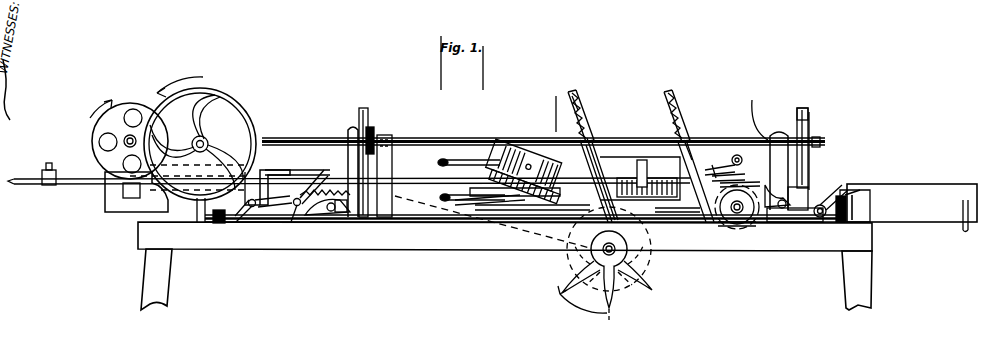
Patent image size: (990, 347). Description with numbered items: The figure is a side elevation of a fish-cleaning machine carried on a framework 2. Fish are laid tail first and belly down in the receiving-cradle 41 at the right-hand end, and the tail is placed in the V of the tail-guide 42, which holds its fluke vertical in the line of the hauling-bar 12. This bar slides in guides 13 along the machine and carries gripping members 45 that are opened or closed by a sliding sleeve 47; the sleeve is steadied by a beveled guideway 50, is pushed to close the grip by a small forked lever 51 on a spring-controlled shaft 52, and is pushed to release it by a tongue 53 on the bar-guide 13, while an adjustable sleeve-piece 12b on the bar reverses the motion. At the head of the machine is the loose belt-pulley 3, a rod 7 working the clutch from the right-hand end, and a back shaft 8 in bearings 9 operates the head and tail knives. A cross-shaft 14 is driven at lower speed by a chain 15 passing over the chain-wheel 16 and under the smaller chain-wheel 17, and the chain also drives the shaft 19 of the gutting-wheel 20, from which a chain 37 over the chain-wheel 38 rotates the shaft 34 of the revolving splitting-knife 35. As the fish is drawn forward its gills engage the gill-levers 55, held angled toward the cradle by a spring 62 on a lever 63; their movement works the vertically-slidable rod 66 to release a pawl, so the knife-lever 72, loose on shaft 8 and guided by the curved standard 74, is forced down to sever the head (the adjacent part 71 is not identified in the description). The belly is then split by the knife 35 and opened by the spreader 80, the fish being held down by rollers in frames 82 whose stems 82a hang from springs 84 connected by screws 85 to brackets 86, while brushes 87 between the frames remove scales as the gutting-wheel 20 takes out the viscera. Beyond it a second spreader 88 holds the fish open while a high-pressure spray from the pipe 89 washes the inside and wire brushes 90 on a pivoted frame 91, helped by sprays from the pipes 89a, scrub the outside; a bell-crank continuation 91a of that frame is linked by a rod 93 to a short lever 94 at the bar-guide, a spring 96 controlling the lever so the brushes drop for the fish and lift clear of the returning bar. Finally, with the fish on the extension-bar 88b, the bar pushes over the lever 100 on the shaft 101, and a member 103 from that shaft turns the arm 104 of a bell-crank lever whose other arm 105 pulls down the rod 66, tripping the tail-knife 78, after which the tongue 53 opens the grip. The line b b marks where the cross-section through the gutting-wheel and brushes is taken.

The framework 2 is at (170, 268).
The loose belt-pulley 3 is at (238, 118).
The rod 7 is at (266, 222).
The shaft 8 is at (298, 140).
The bearings 9 is at (387, 138).
The hauling-bar 12 is at (26, 178).
The sleeve-piece 12b is at (50, 163).
The guides 13 is at (112, 188).
The cross-shaft 14 is at (118, 146).
The chain 15 is at (392, 224).
The chain-wheel 16 is at (133, 108).
The chain-wheel 17 is at (205, 135).
The shaft 19 is at (590, 258).
The gutting-wheel 20 is at (603, 294).
The shaft 34 is at (738, 213).
The splitting-knife 35 is at (748, 212).
The chain 37 is at (670, 262).
The chain-wheel 38 is at (627, 282).
The receiving-cradle 41 is at (912, 208).
The tail-guide 42 is at (800, 190).
The gripping members 45 is at (774, 188).
The sliding sleeve 47 is at (730, 166).
The beveled guideway 50 is at (722, 176).
The forked lever 51 is at (742, 180).
The shaft 52 is at (742, 160).
The tongue 53 is at (285, 168).
The gill-levers 55 is at (826, 204).
The spring 62 is at (858, 192).
The lever 63 is at (850, 190).
The vertically-slidable rod 66 is at (350, 128).
The cap 71 is at (808, 118).
The knife-lever 72 is at (810, 128).
The curved standard 74 is at (366, 110).
The tail-knife 78 is at (374, 135).
The spreader 80 is at (694, 222).
The frames 82 is at (618, 116).
The stems 82a is at (612, 122).
The springs 84 is at (588, 118).
The screws 85 is at (574, 92).
The brackets 86 is at (690, 125).
The brushes 87 is at (633, 176).
The second spreader 88 is at (508, 198).
The extension-bar 88b is at (440, 160).
The pipe 89 is at (460, 200).
The pipes 89a is at (455, 160).
The brushes 90 is at (512, 148).
The frame 91 is at (538, 147).
The bell-crank continuation 91a is at (668, 214).
The rod 93 is at (545, 212).
The short lever 94 is at (248, 208).
The spring 96 is at (216, 223).
The lever 100 is at (302, 196).
The shaft 101 is at (295, 206).
The member 103 is at (312, 196).
The arm 104 is at (329, 212).
The arm 105 is at (342, 214).
The line b b is at (555, 108).